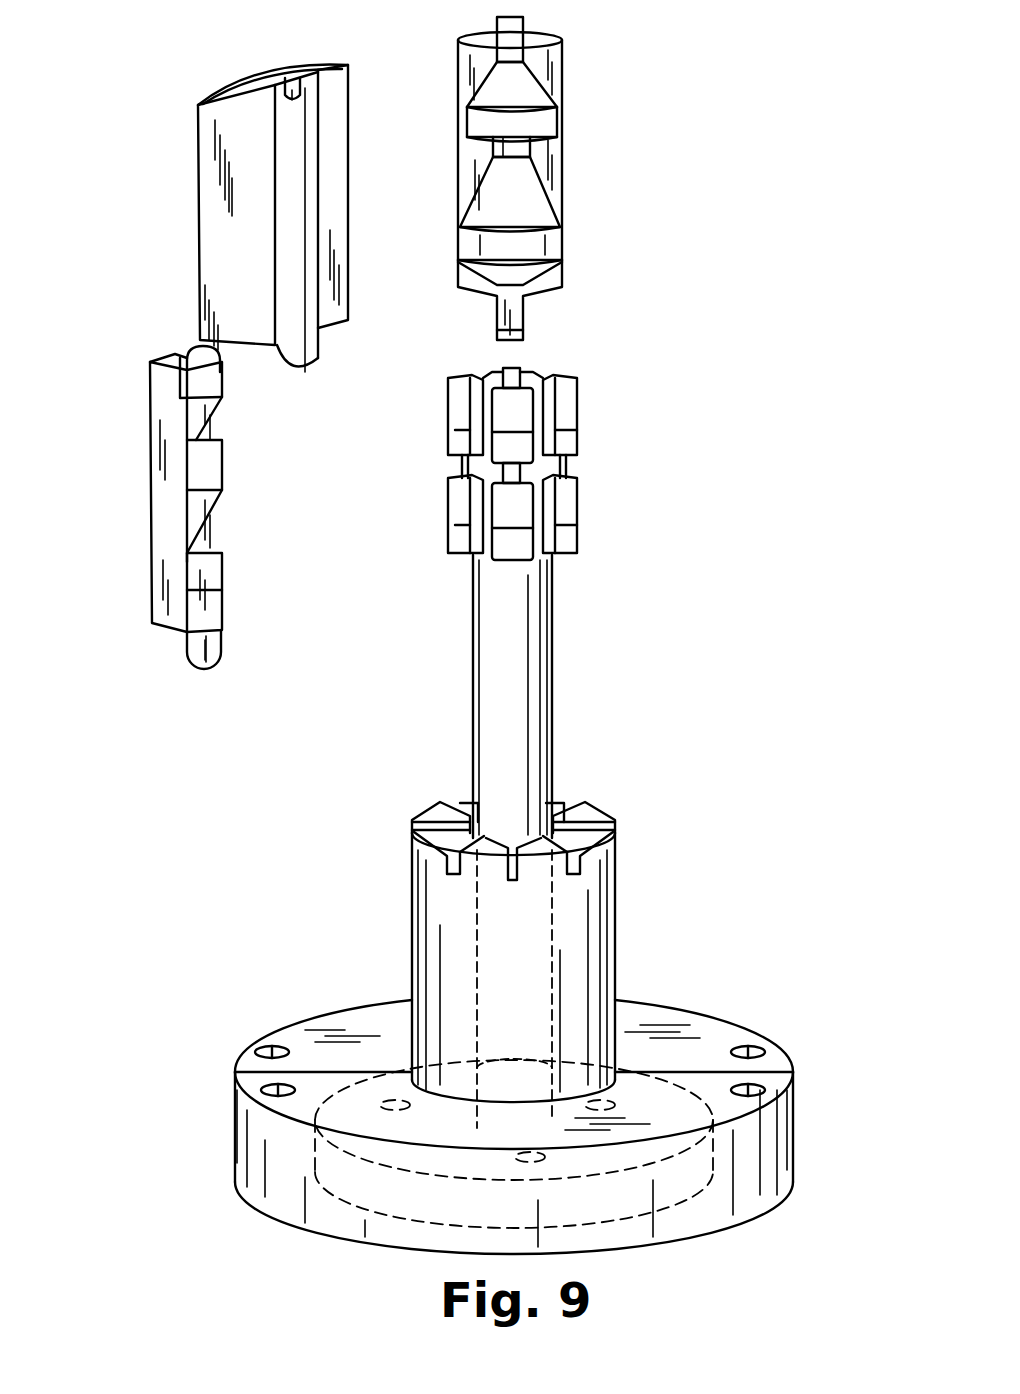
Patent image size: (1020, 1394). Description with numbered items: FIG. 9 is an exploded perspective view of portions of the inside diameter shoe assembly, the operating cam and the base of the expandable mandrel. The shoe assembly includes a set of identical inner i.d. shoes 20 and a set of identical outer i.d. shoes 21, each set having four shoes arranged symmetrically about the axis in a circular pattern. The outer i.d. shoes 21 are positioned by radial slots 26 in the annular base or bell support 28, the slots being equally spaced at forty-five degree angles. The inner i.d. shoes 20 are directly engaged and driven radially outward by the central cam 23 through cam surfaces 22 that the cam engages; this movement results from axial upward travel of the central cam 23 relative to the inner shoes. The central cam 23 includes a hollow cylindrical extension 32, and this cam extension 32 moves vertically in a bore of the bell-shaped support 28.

The inner i.d. shoe 20 is at (150, 605).
The outer i.d. shoe 21 is at (198, 195).
The cam surface 22 is at (540, 205).
The central cam 23 is at (577, 498).
The radial slot 26 is at (612, 870).
The annular base or bell support 28 is at (620, 936).
The hollow cylindrical extension 32 is at (550, 683).